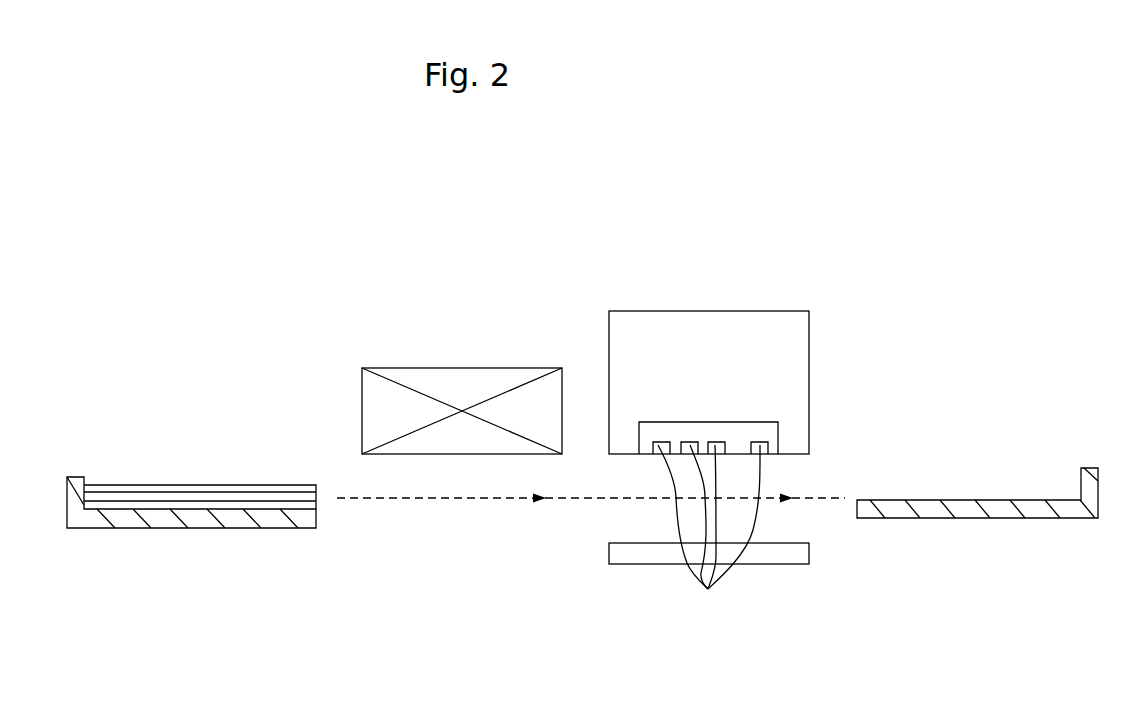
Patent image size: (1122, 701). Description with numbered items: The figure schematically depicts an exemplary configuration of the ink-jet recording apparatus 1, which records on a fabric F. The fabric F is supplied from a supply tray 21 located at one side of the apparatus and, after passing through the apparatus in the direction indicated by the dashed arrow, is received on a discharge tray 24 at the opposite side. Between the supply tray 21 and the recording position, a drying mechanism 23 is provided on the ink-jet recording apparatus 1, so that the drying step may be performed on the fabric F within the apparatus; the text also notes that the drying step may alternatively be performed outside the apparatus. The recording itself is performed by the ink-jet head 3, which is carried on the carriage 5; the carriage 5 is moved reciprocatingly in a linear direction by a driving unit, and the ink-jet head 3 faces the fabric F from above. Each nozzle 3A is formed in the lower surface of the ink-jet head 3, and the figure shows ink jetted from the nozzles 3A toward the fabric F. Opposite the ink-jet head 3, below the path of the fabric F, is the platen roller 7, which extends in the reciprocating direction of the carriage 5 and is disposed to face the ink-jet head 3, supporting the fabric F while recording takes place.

The ink-jet recording apparatus 1 is at (836, 269).
The ink-jet head 3 is at (741, 422).
The nozzle 3A is at (709, 537).
The carriage 5 is at (669, 311).
The platen roller 7 is at (787, 552).
The supply tray 21 is at (200, 528).
The drying mechanism 23 is at (465, 368).
The discharge tray 24 is at (980, 518).
The fabric F is at (157, 485).